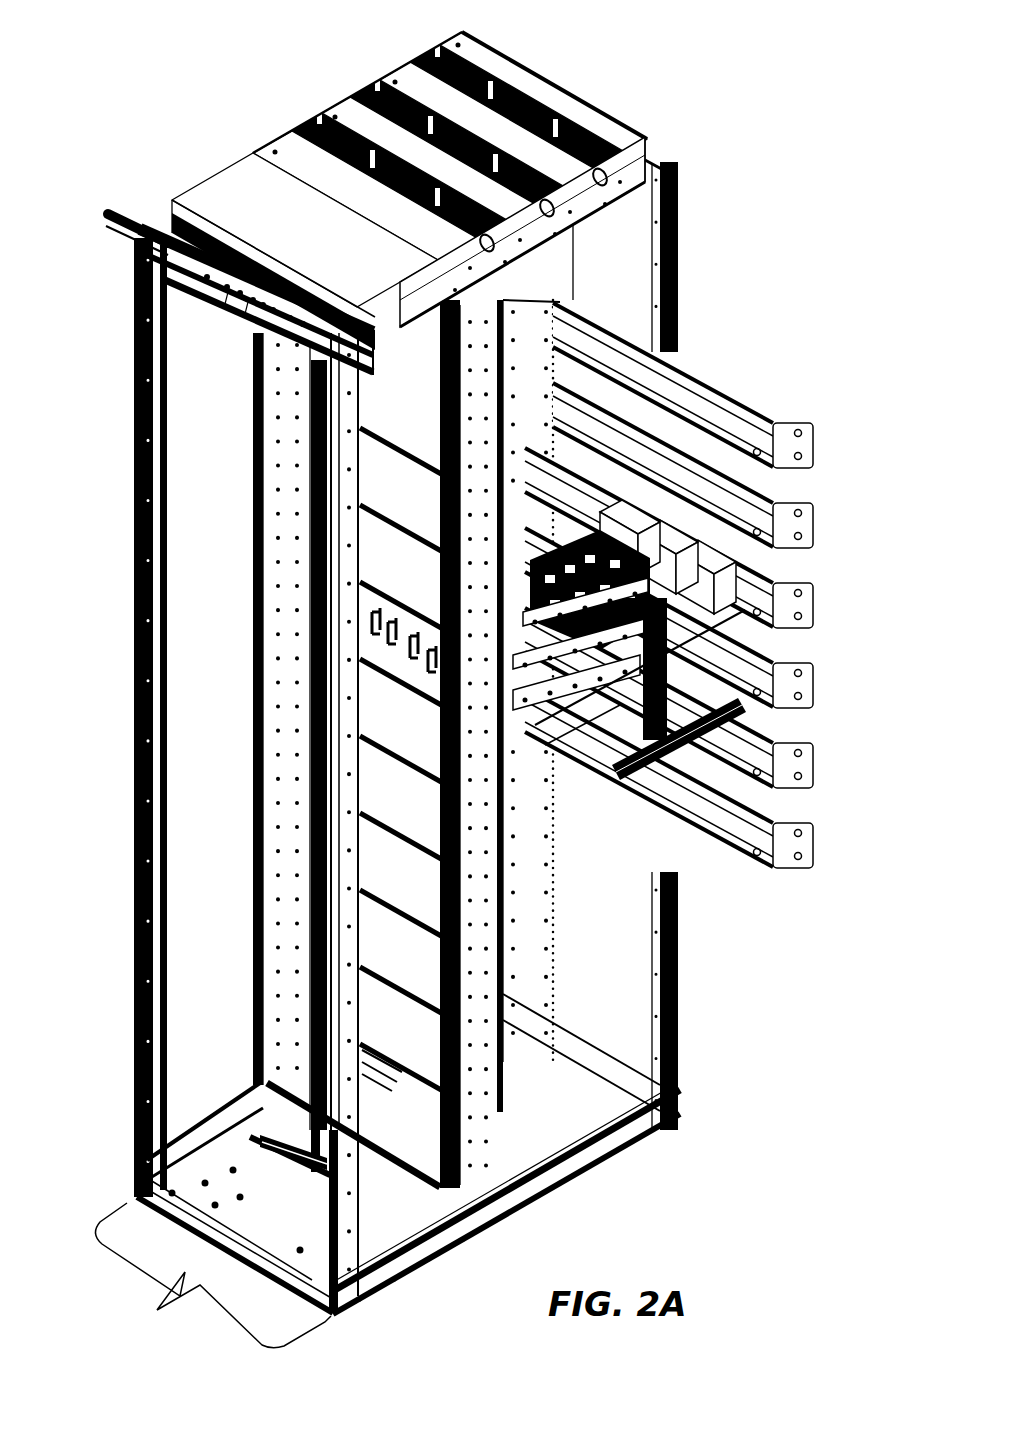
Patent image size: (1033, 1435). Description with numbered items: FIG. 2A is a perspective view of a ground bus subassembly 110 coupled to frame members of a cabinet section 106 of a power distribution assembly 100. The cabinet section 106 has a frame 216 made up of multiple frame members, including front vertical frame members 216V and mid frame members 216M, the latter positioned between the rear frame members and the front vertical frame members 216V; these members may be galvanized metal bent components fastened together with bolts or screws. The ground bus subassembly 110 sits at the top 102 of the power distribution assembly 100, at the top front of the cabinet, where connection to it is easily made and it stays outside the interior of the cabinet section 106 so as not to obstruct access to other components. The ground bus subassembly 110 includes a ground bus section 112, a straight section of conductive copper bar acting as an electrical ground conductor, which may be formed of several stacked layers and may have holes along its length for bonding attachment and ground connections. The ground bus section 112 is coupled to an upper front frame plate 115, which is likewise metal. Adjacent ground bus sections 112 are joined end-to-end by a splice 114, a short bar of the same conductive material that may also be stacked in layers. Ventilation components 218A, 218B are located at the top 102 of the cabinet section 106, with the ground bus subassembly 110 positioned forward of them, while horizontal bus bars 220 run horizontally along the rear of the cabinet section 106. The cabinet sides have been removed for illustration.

The power distribution assembly 100 is at (612, 60).
The top 102 is at (332, 68).
The cabinet section 106 is at (213, 1275).
The ground bus subassembly 110 is at (146, 203).
The ground bus section 112 is at (197, 274).
The splice 114 is at (122, 250).
The upper front frame plate 115 is at (237, 330).
The frame 216 is at (128, 536).
The front vertical frame member 216V is at (340, 675).
The mid frame member 216M is at (500, 1083).
The ventilation component 218A is at (212, 178).
The ventilation component 218B is at (398, 62).
The horizontal bus bar 220 is at (779, 390).